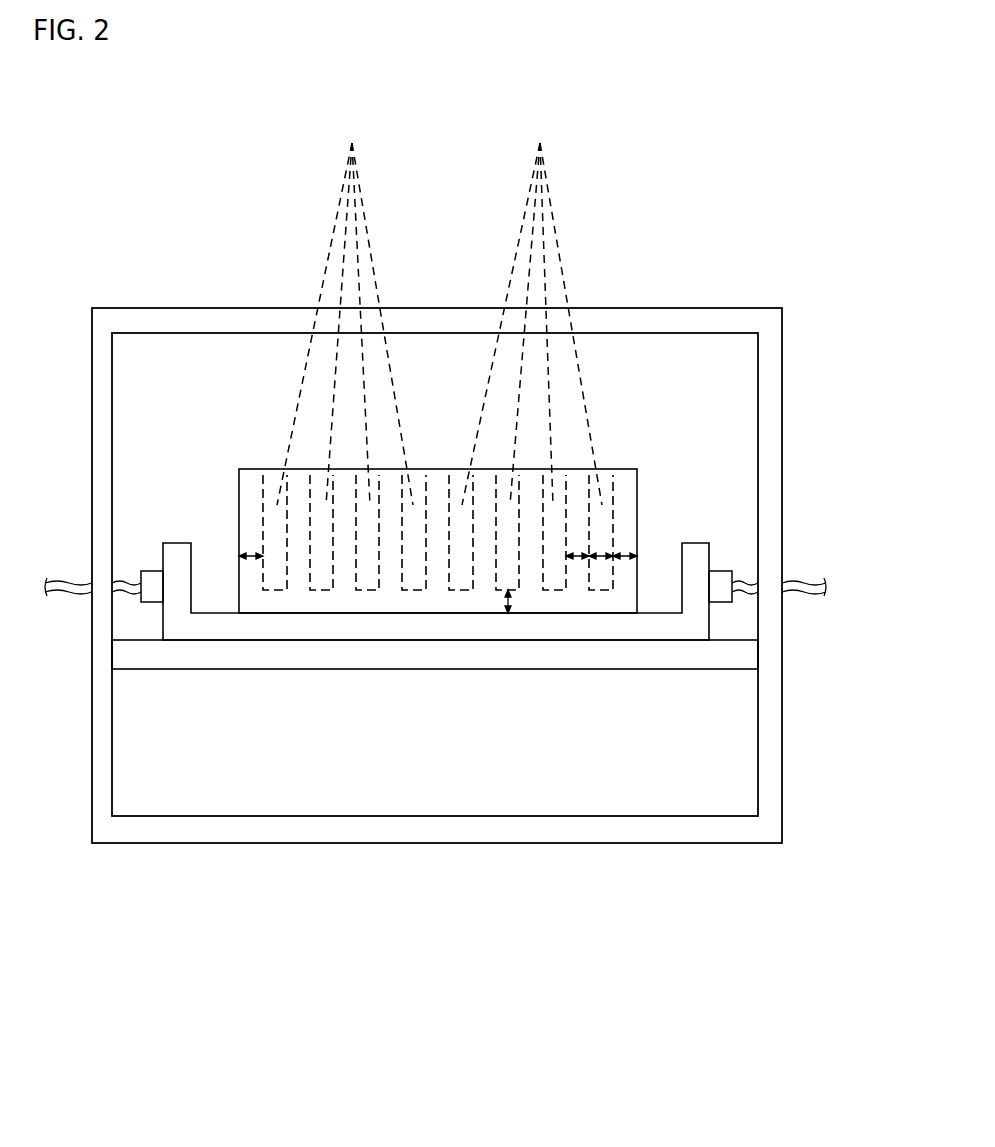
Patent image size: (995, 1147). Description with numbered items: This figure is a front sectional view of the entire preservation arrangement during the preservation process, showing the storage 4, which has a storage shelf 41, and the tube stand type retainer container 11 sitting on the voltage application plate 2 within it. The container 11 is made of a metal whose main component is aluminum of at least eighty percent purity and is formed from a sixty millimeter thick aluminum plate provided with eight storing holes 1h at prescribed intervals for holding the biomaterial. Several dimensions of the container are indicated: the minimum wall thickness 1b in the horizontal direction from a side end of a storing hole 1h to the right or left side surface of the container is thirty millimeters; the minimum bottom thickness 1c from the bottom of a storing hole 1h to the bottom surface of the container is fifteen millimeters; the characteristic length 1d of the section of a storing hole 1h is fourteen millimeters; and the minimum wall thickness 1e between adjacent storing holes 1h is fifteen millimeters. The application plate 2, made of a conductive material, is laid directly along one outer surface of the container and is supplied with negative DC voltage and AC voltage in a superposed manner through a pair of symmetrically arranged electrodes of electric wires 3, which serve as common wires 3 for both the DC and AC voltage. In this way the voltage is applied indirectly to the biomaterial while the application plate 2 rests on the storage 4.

The storage 4 is at (193, 318).
The bottom plate of housing 41 is at (213, 654).
The voltage application plate 2 is at (196, 631).
The light emitting element (1) 11 is at (620, 488).
The storing hole 1h is at (439, 311).
The electric wires 3 is at (68, 590).
The minimum wall thickness in the horizontal direction 1b is at (252, 559).
The minimum wall thickness between the storing holes 1e is at (579, 559).
The characteristic length of the section of the storing hole 1d is at (600, 559).
The minimum bottom thickness in the height-wise direction 1c is at (506, 608).